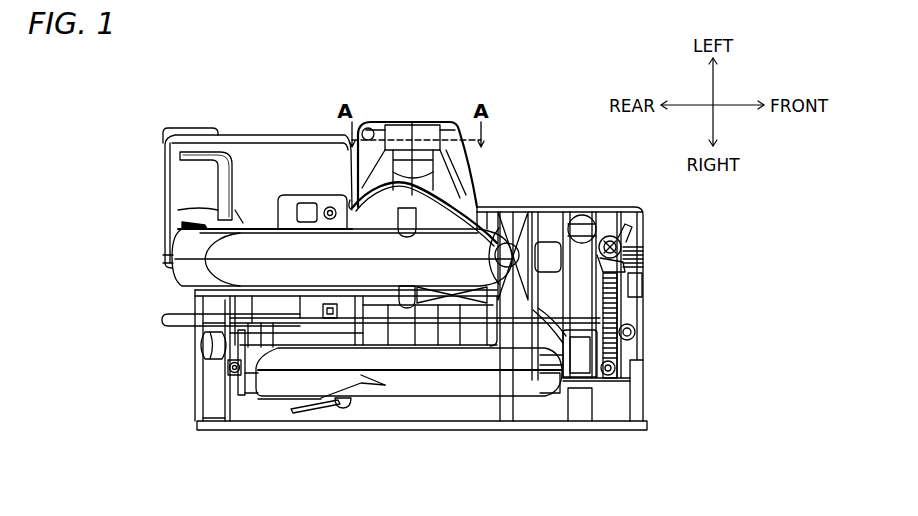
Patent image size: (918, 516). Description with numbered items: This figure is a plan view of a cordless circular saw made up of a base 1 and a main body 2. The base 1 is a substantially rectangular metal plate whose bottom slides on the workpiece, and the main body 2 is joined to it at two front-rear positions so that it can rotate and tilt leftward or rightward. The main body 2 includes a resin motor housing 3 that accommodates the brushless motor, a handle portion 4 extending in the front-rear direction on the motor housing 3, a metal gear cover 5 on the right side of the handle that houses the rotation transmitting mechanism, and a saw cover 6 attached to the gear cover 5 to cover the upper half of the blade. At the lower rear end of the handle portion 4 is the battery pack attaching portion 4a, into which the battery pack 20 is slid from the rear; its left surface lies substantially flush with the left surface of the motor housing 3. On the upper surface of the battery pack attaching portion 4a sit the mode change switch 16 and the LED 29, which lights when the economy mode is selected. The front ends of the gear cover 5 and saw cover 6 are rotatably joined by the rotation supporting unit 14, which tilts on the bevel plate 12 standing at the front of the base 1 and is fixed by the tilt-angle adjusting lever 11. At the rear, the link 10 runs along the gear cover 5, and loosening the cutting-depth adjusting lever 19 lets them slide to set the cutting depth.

The base 1 is at (642, 425).
The main body 2 is at (416, 120).
The motor housing 3 is at (458, 156).
The handle portion 4 is at (483, 240).
The battery pack attaching portion 4a is at (270, 163).
The gear cover 5 is at (453, 325).
The saw cover 6 is at (433, 388).
The link 10 is at (240, 343).
The tilt-angle adjusting lever 11 is at (645, 268).
The bevel plate 12 is at (618, 318).
The rotation supporting unit 14 is at (582, 385).
The mode change switch 16 is at (307, 202).
The cutting-depth adjusting lever 19 is at (168, 320).
The battery pack 20 is at (162, 160).
The LED 29 is at (330, 206).